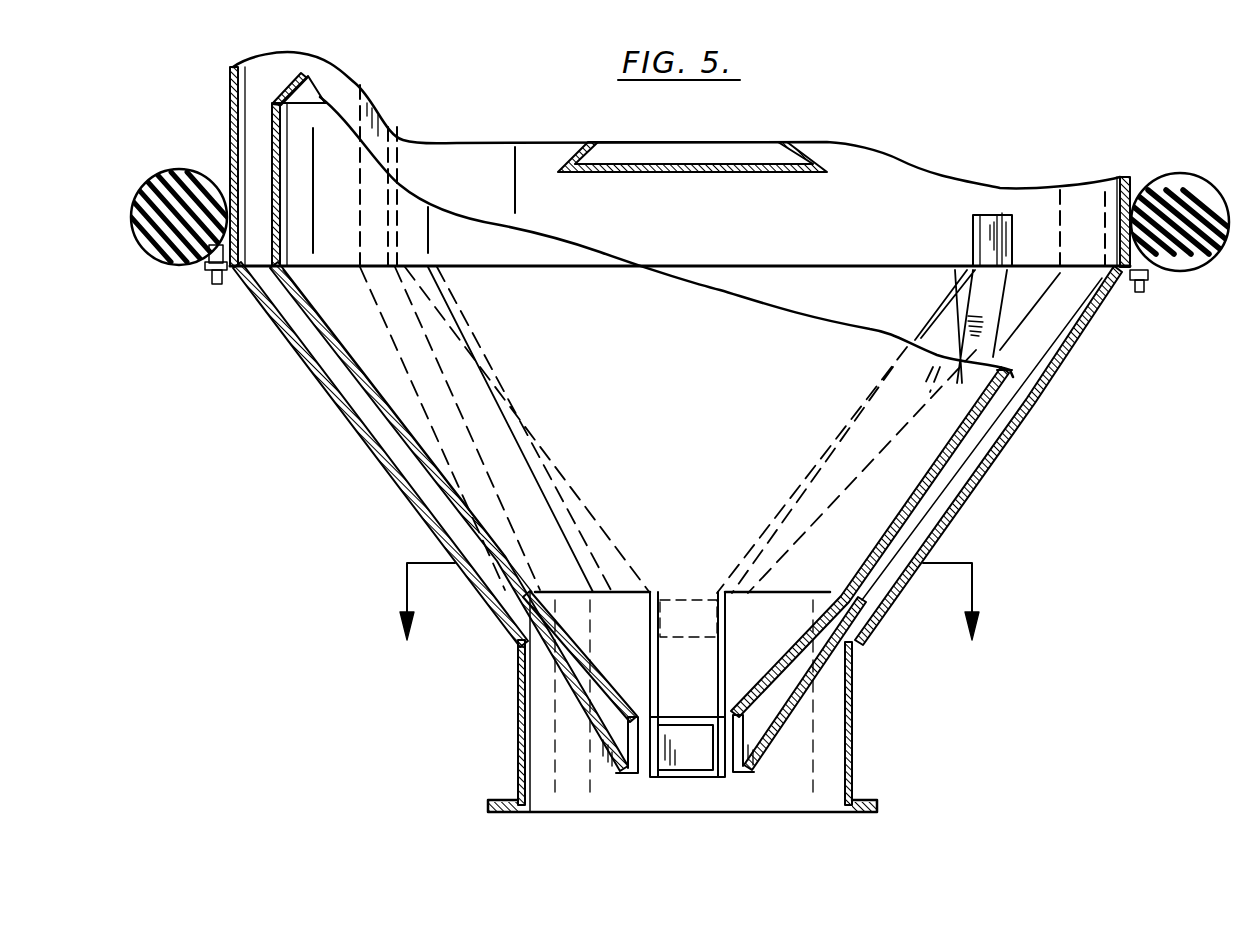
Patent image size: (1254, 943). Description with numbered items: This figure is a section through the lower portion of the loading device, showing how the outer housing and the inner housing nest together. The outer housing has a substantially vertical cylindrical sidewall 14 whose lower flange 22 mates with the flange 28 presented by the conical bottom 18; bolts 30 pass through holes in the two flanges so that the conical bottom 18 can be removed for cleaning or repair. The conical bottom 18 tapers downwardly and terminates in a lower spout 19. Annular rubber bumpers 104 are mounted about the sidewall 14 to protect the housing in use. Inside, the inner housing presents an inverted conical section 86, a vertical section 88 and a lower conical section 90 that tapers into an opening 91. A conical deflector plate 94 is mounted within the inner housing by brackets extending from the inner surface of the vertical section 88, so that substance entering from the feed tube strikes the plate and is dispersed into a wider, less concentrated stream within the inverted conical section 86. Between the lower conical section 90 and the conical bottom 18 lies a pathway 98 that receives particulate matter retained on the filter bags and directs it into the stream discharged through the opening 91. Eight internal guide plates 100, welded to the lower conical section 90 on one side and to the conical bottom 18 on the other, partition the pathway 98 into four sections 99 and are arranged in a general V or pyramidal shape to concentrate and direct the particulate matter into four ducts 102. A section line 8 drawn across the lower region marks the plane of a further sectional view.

The vertical cylindrical sidewall 14 is at (230, 70).
The inverted conical section 86 is at (287, 97).
The vertical section 88 is at (272, 125).
The annular rubber bumpers 104 is at (178, 265).
The bolts 30 is at (217, 287).
The lower flange 22 is at (1187, 178).
The flange 28 is at (1147, 277).
The conical deflector plate 94 is at (775, 172).
The pathway sections 99 is at (330, 367).
The lower conical section 90 is at (380, 403).
The pathway 98 is at (400, 457).
The conical bottom 18 is at (993, 450).
The internal guide plates 100 is at (777, 520).
The ducts 102 is at (790, 685).
The opening 91 is at (520, 645).
The lower spout 19 is at (852, 750).
The section line 8 is at (687, 625).